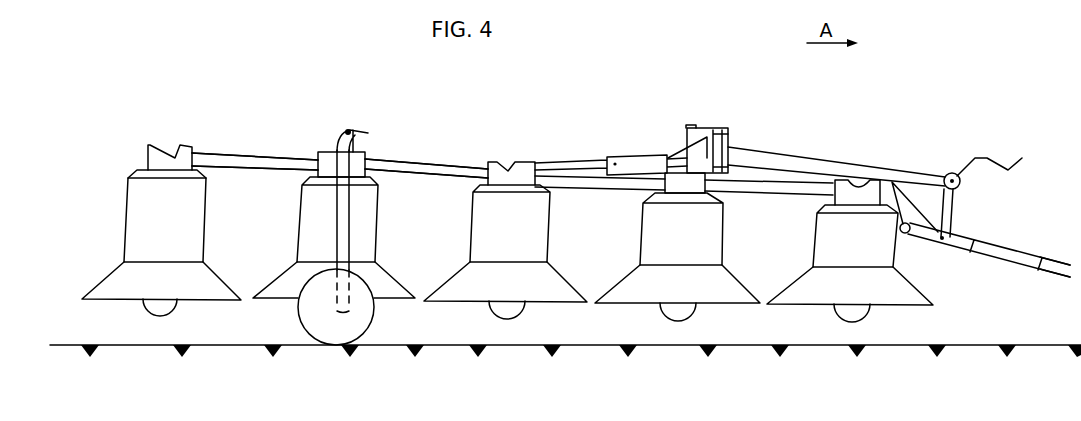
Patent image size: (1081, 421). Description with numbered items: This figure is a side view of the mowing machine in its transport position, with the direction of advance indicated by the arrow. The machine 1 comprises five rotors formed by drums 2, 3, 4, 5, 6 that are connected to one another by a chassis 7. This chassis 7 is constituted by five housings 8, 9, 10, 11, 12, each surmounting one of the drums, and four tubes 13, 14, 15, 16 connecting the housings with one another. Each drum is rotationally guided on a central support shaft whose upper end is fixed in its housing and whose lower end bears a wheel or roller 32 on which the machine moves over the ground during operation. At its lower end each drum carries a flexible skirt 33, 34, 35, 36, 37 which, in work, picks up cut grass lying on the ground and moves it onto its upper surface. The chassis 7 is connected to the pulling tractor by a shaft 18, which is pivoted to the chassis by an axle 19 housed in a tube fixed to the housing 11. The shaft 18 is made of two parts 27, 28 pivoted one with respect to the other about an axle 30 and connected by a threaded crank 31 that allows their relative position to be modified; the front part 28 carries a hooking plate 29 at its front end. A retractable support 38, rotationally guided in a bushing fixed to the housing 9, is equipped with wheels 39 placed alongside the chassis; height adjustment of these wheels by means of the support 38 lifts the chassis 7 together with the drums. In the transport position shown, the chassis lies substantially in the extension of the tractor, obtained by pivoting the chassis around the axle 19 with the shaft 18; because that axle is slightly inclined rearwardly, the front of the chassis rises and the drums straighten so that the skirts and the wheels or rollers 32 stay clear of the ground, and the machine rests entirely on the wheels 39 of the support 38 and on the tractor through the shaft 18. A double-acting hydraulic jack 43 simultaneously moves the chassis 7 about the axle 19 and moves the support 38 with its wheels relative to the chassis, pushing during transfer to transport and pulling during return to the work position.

The agricultural implement 1 is at (118, 186).
The drum 2 is at (130, 216).
The drum 3 is at (301, 215).
The drum 4 is at (477, 227).
The drum 5 is at (648, 232).
The drum 6 is at (822, 245).
The chassis 7 is at (231, 146).
The housing 8 is at (174, 158).
The housing 9 is at (358, 165).
The housing 10 is at (505, 168).
The housing 11 is at (673, 180).
The housing 12 is at (845, 183).
The tube 13 is at (258, 160).
The tube 14 is at (426, 170).
The tube 15 is at (592, 183).
The tube 16 is at (762, 190).
The shaft 18 is at (894, 160).
The axle 19 is at (720, 128).
The part 27 is at (773, 152).
The part 28 is at (1012, 255).
The hooking plate 29 is at (1052, 277).
The axle 30 is at (942, 242).
The threaded crank 31 is at (983, 158).
The wheel or roller 32 is at (158, 304).
The flexible skirt 33 is at (112, 280).
The flexible skirt 34 is at (288, 280).
The flexible skirt 35 is at (460, 280).
The flexible skirt 36 is at (633, 280).
The flexible skirt 37 is at (908, 298).
The retractable support 38 is at (342, 208).
The wheel 39 is at (323, 337).
The hydraulic jack 43 is at (588, 163).